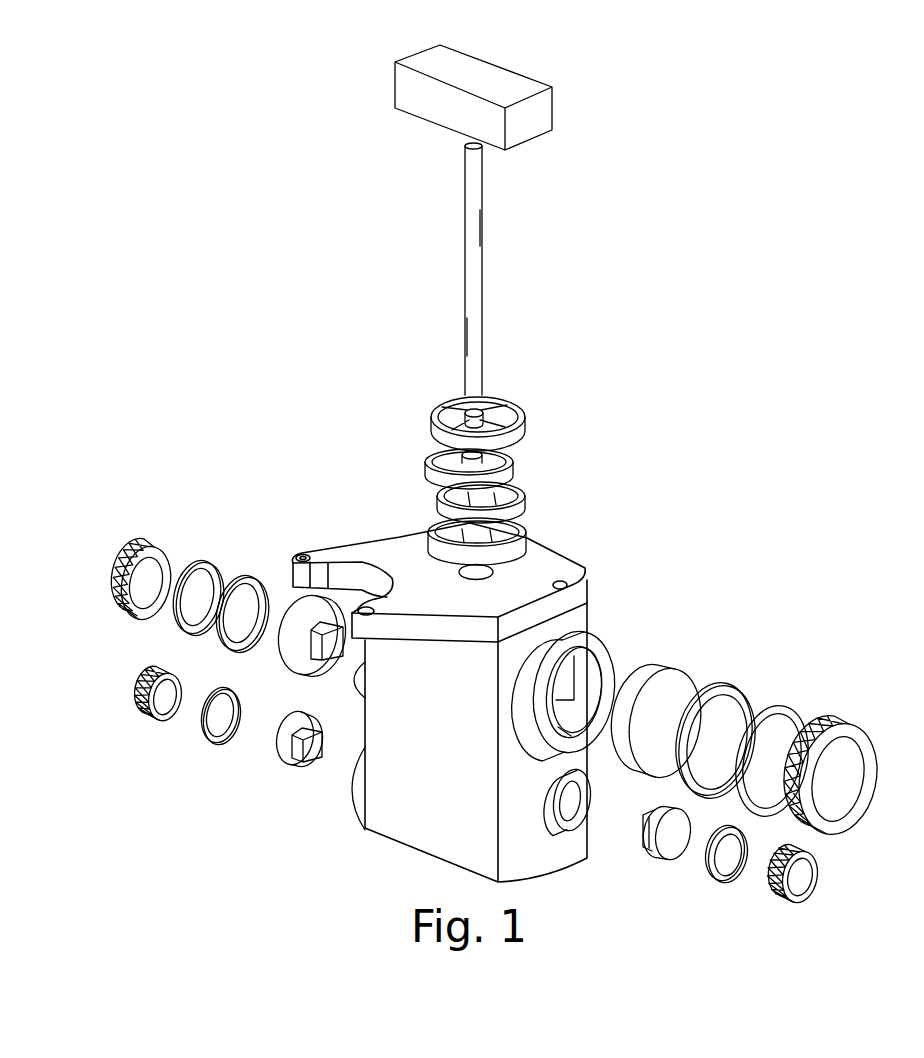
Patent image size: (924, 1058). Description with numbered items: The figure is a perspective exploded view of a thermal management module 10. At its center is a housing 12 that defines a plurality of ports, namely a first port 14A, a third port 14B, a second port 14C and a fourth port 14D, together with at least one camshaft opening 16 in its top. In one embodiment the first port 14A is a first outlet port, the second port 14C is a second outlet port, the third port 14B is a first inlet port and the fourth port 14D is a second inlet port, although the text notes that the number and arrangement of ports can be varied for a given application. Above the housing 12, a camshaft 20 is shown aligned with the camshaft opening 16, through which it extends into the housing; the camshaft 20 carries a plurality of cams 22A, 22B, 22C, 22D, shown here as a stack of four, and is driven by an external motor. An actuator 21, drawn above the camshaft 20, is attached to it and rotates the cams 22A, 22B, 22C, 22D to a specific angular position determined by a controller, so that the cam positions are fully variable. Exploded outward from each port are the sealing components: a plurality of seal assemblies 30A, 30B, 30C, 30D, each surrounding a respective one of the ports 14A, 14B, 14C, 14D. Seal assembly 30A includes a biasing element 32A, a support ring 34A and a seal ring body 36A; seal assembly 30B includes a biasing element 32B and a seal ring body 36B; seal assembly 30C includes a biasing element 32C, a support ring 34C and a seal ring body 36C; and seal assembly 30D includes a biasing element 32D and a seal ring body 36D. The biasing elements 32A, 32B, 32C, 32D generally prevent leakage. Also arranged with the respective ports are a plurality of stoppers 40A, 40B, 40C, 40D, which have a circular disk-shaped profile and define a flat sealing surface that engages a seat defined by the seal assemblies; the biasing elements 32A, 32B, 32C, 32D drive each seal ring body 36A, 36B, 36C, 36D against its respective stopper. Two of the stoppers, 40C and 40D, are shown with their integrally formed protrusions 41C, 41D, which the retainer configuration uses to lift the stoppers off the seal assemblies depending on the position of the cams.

The thermal management module 10 is at (305, 490).
The housing 12 is at (560, 575).
The first port 14A is at (598, 642).
The third port 14B is at (575, 830).
The second port 14C is at (355, 678).
The fourth port 14D is at (360, 760).
The camshaft opening 16 is at (455, 573).
The camshaft 20 is at (484, 232).
The actuator 21 is at (473, 97).
The cam 22A is at (427, 468).
The cam 22B is at (520, 433).
The cam 22C is at (523, 540).
The cam 22D is at (517, 487).
The seal assembly 30A is at (721, 673).
The seal assembly 30B is at (729, 891).
The seal assembly 30C is at (195, 553).
The seal assembly 30D is at (202, 748).
The biasing element 32A is at (843, 727).
The biasing element 32B is at (807, 897).
The biasing element 32C is at (115, 555).
The biasing element 32D is at (130, 688).
The support ring 34A is at (782, 707).
The support ring 34C is at (175, 634).
The seal ring body 36A is at (747, 692).
The seal ring body 36B is at (748, 830).
The seal ring body 36C is at (220, 650).
The seal ring body 36D is at (200, 717).
The stopper 40A is at (650, 675).
The stopper 40B is at (670, 847).
The stopper 40C is at (294, 617).
The stopper 40D is at (277, 743).
The protrusion 41C is at (311, 655).
The protrusion 41D is at (310, 758).